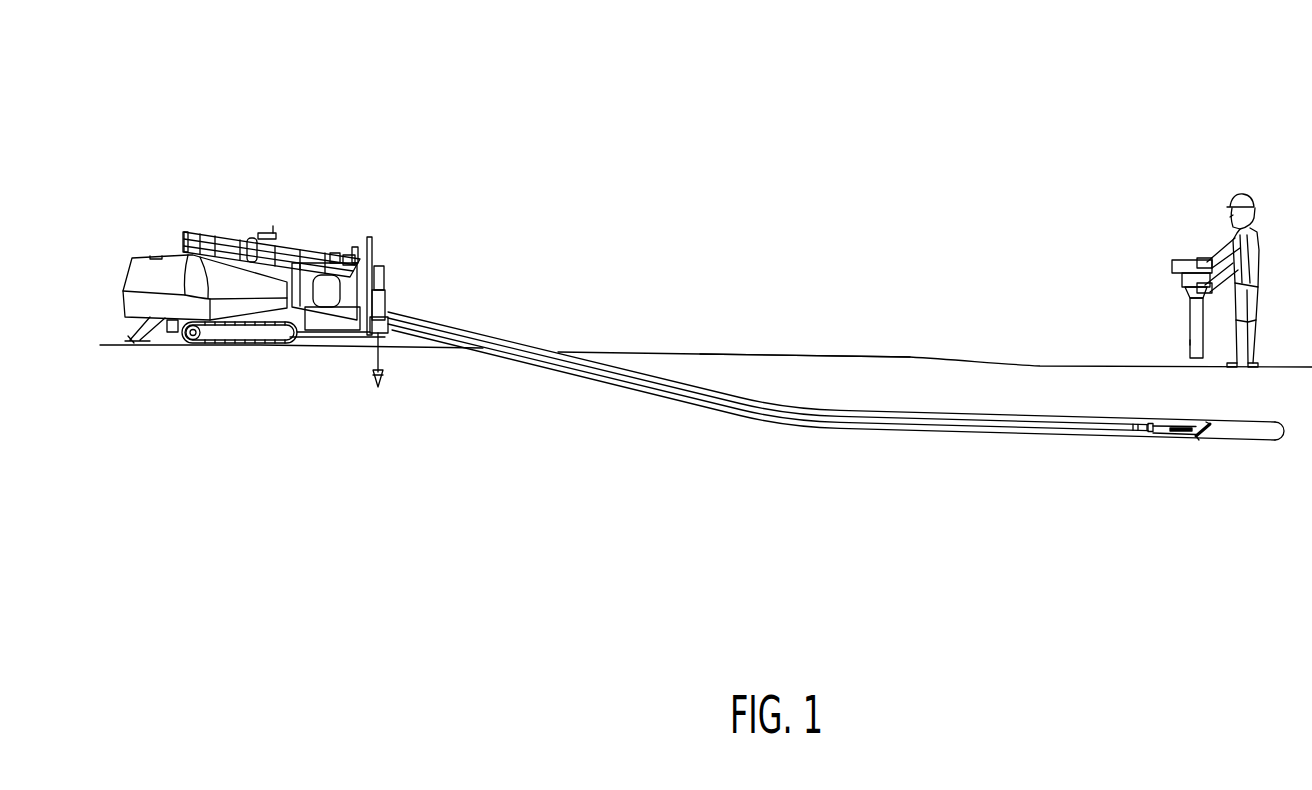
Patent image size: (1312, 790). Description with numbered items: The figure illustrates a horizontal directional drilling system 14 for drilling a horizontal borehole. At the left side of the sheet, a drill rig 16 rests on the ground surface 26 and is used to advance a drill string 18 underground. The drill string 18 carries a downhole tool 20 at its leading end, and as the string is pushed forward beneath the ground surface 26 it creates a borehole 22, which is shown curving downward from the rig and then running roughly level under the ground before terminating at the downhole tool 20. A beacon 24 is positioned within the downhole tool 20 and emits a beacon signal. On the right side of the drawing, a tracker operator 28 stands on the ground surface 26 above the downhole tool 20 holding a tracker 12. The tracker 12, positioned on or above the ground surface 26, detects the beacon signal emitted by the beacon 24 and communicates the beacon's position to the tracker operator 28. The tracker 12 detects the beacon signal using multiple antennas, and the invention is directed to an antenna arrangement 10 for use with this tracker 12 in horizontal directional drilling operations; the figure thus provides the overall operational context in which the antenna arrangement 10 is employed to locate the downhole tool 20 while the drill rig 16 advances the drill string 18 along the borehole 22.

The antenna arrangement 10 is at (1172, 340).
The tracker 12 is at (1180, 260).
The horizontal directional drilling system 14 is at (757, 111).
The drill rig 16 is at (297, 248).
The drill string 18 is at (950, 428).
The downhole tool 20 is at (1167, 443).
The borehole 22 is at (1017, 435).
The beacon 24 is at (1180, 429).
The ground surface 26 is at (910, 357).
The tracker operator 28 is at (1242, 192).